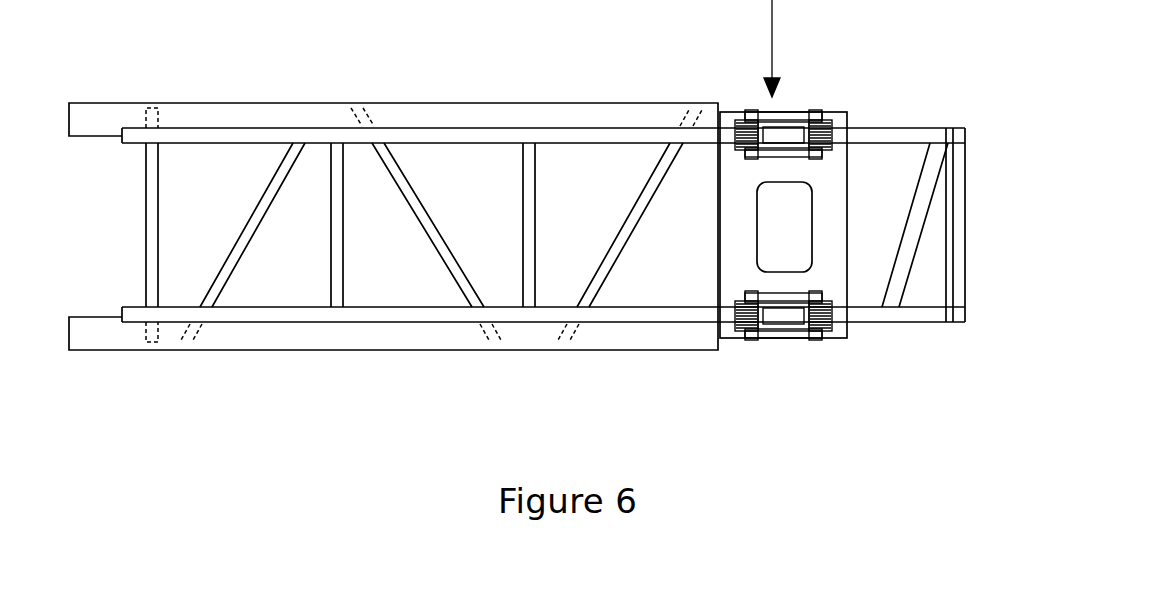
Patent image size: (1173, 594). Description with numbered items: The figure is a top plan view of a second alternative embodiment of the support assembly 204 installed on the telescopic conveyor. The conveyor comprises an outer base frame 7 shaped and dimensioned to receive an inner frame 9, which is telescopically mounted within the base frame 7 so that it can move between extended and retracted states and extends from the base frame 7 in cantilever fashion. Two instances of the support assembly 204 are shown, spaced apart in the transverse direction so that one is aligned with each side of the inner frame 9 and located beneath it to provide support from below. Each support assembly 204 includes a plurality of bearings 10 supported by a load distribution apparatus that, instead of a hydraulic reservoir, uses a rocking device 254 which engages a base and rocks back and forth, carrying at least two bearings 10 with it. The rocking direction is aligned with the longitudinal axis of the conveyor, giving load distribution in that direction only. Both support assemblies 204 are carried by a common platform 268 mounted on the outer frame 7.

The outer base frame 7 is at (483, 113).
The inner frame 9 is at (888, 138).
The bearings 10 is at (742, 335).
The support assembly 204 is at (790, 79).
The rocking device 254 is at (787, 315).
The platform 268 is at (827, 202).